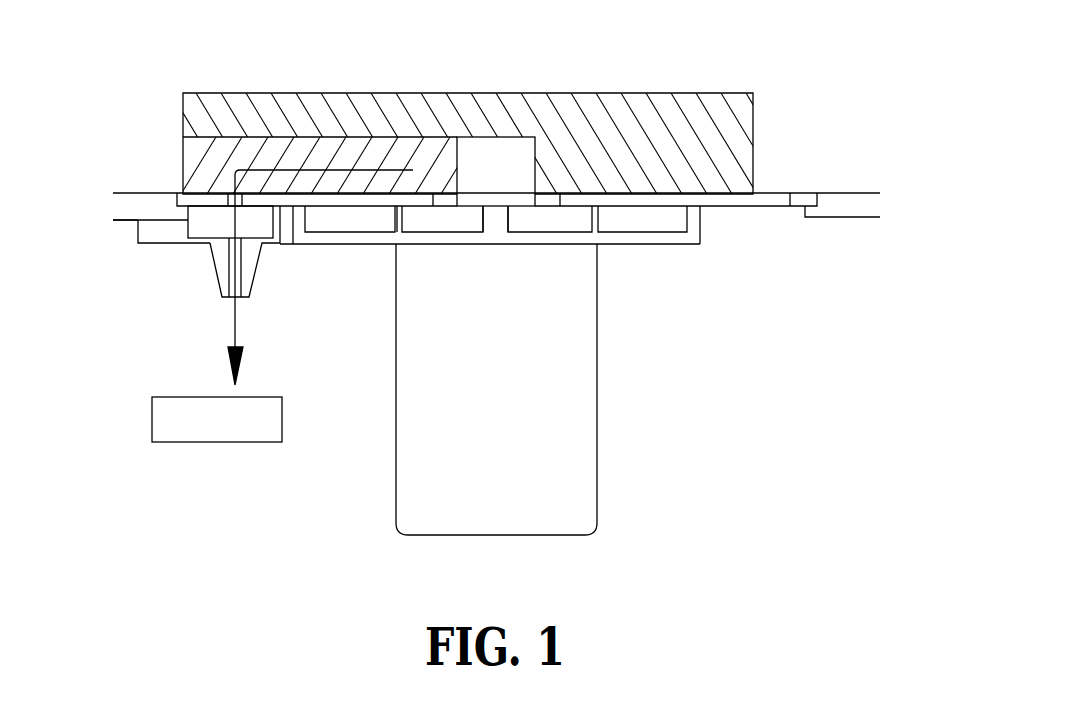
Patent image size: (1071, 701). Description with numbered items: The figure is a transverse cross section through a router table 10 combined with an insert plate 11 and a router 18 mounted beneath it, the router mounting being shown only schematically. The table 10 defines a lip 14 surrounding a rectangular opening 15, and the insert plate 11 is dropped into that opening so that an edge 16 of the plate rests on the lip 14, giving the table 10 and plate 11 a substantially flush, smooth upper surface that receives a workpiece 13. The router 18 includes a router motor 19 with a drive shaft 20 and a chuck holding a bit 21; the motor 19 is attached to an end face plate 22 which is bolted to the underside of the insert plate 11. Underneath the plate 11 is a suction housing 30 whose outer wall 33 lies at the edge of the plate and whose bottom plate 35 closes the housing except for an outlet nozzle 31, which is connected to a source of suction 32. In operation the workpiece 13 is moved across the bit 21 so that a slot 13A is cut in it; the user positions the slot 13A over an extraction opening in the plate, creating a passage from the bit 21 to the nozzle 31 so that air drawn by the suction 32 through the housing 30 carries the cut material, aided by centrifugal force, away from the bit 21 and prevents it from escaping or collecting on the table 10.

The router table 10 is at (153, 207).
The insert plate 11 is at (790, 193).
The workpiece 13 is at (368, 93).
The slot 13A is at (213, 157).
The lip 14 is at (805, 213).
The rectangular opening 15 is at (723, 207).
The edge of the plate 16 is at (880, 194).
The router 18 is at (560, 410).
The router motor 19 is at (508, 478).
The drive shaft 20 is at (497, 218).
The bit 21 is at (497, 168).
The end face plate 22 is at (688, 245).
The suction housing 30 is at (152, 232).
The outlet nozzle 31 is at (222, 262).
The source of suction 32 is at (218, 435).
The outer wall 33 is at (138, 232).
The bottom plate 35 is at (164, 247).